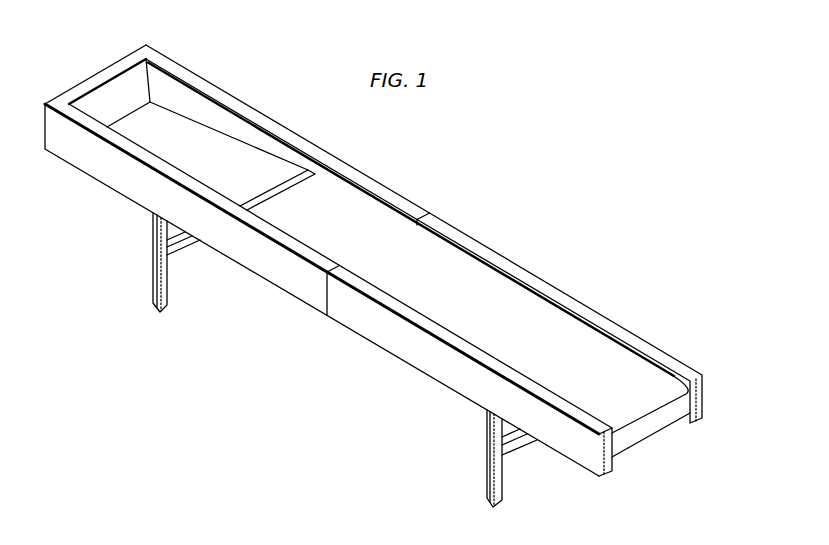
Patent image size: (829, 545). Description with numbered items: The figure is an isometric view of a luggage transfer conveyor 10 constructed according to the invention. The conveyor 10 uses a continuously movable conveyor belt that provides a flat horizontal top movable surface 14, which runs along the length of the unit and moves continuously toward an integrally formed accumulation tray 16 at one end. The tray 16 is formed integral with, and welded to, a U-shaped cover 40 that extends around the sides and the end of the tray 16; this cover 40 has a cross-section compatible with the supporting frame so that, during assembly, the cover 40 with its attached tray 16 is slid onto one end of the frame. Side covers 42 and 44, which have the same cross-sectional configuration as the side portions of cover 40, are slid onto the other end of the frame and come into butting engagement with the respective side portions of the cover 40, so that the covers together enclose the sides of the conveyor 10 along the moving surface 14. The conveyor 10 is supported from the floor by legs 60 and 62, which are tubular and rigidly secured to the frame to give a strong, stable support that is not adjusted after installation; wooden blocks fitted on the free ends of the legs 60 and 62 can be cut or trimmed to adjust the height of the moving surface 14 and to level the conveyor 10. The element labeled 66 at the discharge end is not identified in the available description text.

The luggage transfer conveyor 10 is at (299, 349).
The flat horizontal top movable surface 14 is at (593, 343).
The accumulation tray 16 is at (123, 95).
The U-shaped cover 40 is at (372, 179).
The side cover 42 is at (510, 261).
The side cover 44 is at (428, 375).
The leg 60 is at (153, 280).
The leg 62 is at (487, 461).
The end board 66 is at (652, 427).